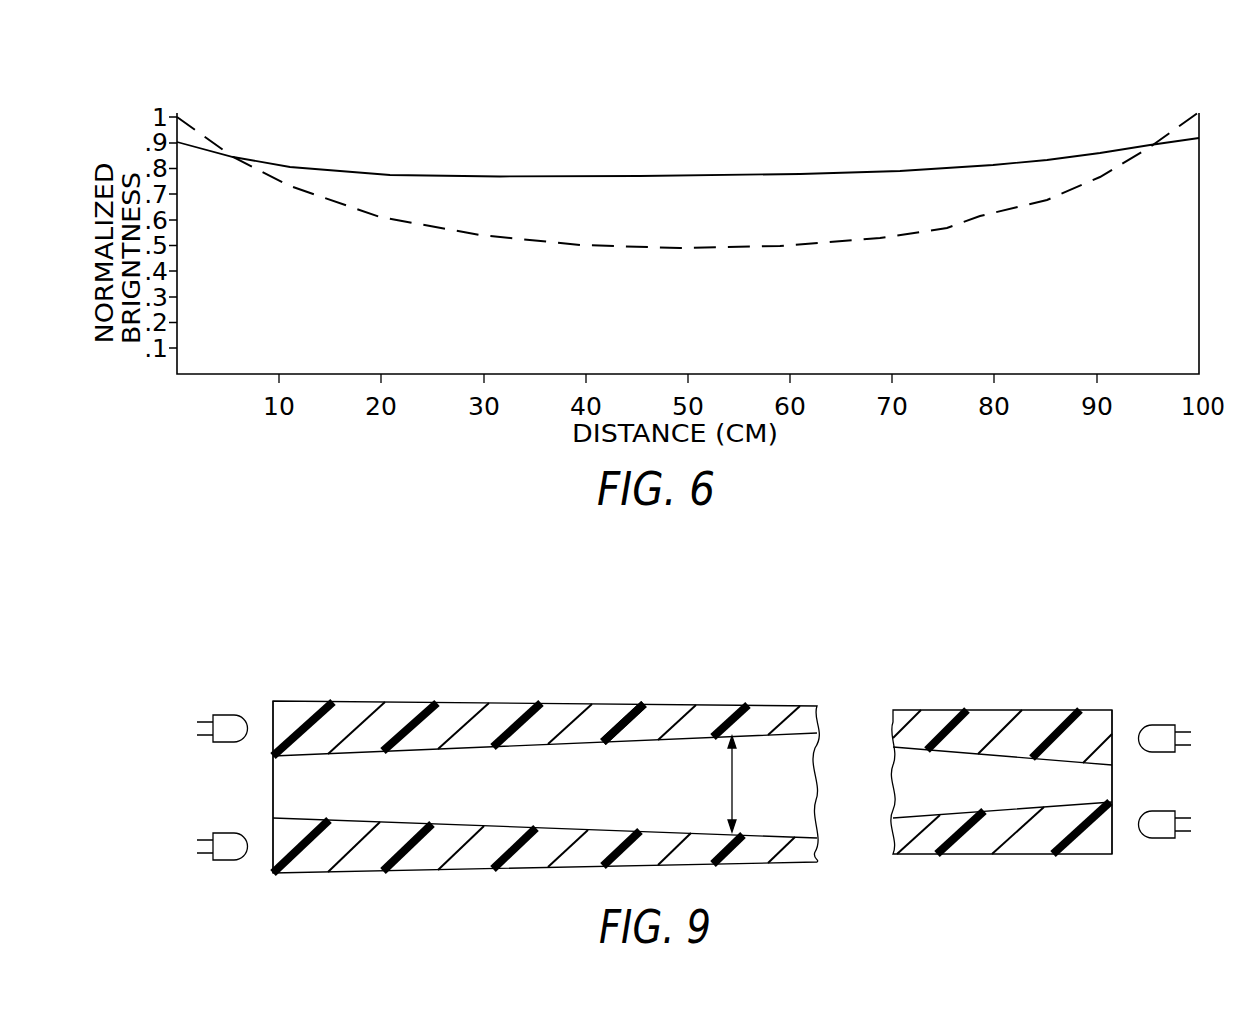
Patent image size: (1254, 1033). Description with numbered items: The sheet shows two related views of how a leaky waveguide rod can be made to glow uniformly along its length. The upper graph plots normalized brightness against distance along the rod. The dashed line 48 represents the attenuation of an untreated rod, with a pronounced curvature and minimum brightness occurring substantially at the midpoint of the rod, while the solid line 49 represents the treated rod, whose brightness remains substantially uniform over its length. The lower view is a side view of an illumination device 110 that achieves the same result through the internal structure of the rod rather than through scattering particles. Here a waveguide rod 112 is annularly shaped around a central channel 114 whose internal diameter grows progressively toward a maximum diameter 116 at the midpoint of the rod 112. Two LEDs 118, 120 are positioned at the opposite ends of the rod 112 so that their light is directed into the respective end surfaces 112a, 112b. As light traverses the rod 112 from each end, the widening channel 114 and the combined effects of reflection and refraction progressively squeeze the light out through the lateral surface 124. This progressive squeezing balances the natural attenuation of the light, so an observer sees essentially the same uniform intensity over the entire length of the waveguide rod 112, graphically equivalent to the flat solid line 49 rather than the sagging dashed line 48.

In FIG. 6, the dashed line 48 is at (913, 234).
In FIG. 6, the solid line 49 is at (916, 172).
In FIG. 9, the illumination device 110 is at (459, 678).
In FIG. 9, the waveguide rod 112 is at (517, 702).
In FIG. 9, the end surface 112a is at (1113, 718).
In FIG. 9, the end surface 112b is at (273, 700).
In FIG. 9, the central channel 114 is at (676, 794).
In FIG. 9, the maximum diameter 116 is at (733, 773).
In FIG. 9, the LED 118 is at (1163, 730).
In FIG. 9, the LED 120 is at (218, 718).
In FIG. 9, the lateral surface 124 is at (627, 703).